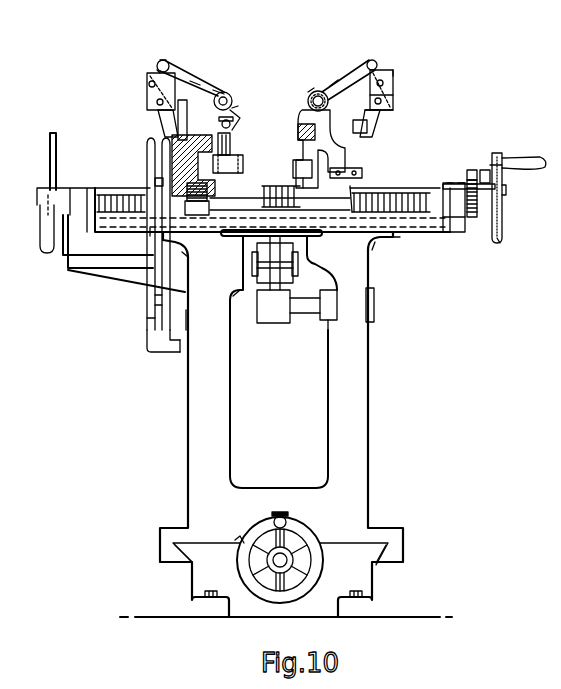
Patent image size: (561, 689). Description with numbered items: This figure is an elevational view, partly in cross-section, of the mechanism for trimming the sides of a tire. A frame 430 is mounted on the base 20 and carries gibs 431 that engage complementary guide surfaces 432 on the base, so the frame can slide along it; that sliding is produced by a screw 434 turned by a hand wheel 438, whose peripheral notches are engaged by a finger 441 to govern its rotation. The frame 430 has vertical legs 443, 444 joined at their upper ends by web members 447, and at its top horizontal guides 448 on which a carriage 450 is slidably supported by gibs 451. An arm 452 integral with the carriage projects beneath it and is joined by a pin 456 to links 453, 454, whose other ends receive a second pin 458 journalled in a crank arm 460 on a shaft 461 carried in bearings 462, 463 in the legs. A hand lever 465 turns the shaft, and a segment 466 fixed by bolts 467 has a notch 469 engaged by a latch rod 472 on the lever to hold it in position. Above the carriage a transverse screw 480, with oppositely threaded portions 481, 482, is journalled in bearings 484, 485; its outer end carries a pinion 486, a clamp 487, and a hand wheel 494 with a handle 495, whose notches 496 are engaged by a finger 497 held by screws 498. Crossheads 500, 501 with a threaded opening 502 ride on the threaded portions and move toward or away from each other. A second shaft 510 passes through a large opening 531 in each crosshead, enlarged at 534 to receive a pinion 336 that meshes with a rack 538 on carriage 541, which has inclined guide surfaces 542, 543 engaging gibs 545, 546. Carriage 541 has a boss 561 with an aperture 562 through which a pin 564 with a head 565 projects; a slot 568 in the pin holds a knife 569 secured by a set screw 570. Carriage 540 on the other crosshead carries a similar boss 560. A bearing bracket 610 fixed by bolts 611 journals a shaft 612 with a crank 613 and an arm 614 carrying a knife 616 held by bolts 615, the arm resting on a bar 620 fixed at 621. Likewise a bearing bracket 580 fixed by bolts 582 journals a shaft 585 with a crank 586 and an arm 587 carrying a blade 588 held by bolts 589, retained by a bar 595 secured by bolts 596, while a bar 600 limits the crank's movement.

The base 20 is at (318, 618).
The worm gear 336 is at (195, 215).
The frame 430 is at (370, 470).
The gibs 431 is at (166, 562).
The guide surfaces 432 is at (186, 568).
The screw 434 is at (268, 560).
The hand wheel 438 is at (321, 568).
The finger 441 is at (288, 518).
The leg 443 is at (370, 420).
The leg 444 is at (232, 430).
The web members 447 is at (240, 296).
The guides 448 is at (190, 252).
The carriage 450 is at (445, 236).
The gibs 451 is at (398, 240).
The arm 452 is at (318, 236).
The link 453 is at (294, 262).
The link 454 is at (256, 275).
The pin 456 is at (255, 262).
The second pin 458 is at (297, 275).
The crank arm 460 is at (275, 325).
The shaft 461 is at (310, 314).
The bearing 462 is at (372, 322).
The bearing 463 is at (188, 325).
The hand lever 465 is at (150, 300).
The segment 466 is at (162, 340).
The bolts 467 is at (178, 353).
The notch 469 is at (152, 320).
The latch rod 472 is at (160, 268).
The screw 480 is at (450, 183).
The threaded portion 481 is at (455, 184).
The threaded portion 482 is at (95, 188).
The bearing 484 is at (460, 236).
The bearing 485 is at (68, 233).
The pinion 486 is at (494, 168).
The clamp 487 is at (530, 160).
The hand wheel 494 is at (503, 205).
The handle 495 is at (503, 190).
The notches 496 is at (501, 240).
The finger 497 is at (474, 180).
The screws 498 is at (462, 182).
The crosshead 500 is at (410, 194).
The crosshead 501 is at (155, 182).
The threaded opening 502 is at (385, 194).
The second shaft 510 is at (150, 233).
The opening 531 is at (218, 188).
The enlarged portion 534 is at (243, 240).
The rack 538 is at (150, 172).
The carriage 540 is at (362, 172).
The carriage 541 is at (162, 142).
The guide surface 542 is at (147, 152).
The guide surface 543 is at (232, 124).
The gib 545 is at (318, 213).
The gib 546 is at (232, 98).
The boss 560 is at (305, 180).
The boss 561 is at (243, 162).
The aperture 562 is at (300, 130).
The pin 564 is at (231, 145).
The head 565 is at (292, 168).
The slot 568 is at (300, 130).
The knife 569 is at (308, 96).
The set screw 570 is at (240, 110).
The bearing bracket 580 is at (344, 78).
The bolts 582 is at (366, 133).
The shaft 585 is at (312, 90).
The crank 586 is at (335, 82).
The arm 587 is at (393, 100).
The blade 588 is at (378, 130).
The bolts 589 is at (393, 72).
The bar 595 is at (385, 112).
The bolts 596 is at (393, 85).
The bar 600 is at (467, 175).
The bearing bracket 610 is at (215, 62).
The bolts 611 is at (178, 122).
The shaft 612 is at (241, 95).
The crank 613 is at (166, 61).
The arm 614 is at (158, 71).
The bolts 615 is at (147, 85).
The knife 616 is at (160, 115).
The bar 620 is at (195, 82).
The bolts 621 is at (219, 90).